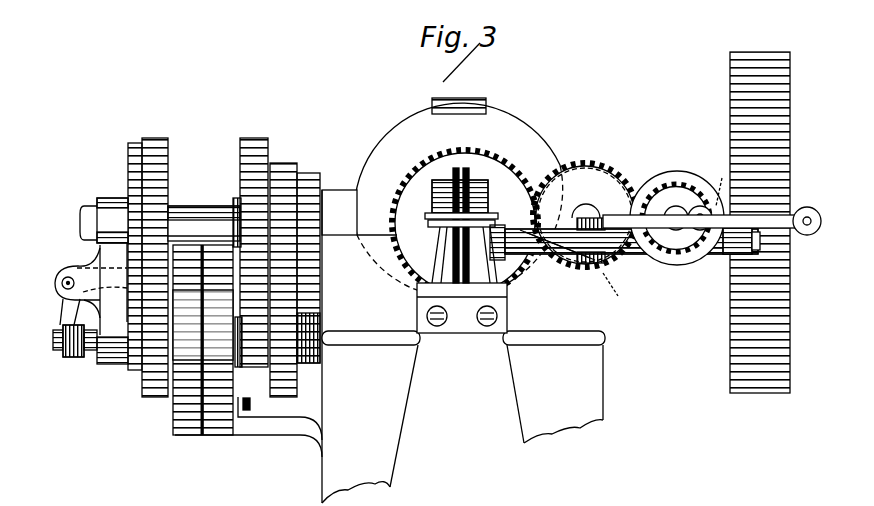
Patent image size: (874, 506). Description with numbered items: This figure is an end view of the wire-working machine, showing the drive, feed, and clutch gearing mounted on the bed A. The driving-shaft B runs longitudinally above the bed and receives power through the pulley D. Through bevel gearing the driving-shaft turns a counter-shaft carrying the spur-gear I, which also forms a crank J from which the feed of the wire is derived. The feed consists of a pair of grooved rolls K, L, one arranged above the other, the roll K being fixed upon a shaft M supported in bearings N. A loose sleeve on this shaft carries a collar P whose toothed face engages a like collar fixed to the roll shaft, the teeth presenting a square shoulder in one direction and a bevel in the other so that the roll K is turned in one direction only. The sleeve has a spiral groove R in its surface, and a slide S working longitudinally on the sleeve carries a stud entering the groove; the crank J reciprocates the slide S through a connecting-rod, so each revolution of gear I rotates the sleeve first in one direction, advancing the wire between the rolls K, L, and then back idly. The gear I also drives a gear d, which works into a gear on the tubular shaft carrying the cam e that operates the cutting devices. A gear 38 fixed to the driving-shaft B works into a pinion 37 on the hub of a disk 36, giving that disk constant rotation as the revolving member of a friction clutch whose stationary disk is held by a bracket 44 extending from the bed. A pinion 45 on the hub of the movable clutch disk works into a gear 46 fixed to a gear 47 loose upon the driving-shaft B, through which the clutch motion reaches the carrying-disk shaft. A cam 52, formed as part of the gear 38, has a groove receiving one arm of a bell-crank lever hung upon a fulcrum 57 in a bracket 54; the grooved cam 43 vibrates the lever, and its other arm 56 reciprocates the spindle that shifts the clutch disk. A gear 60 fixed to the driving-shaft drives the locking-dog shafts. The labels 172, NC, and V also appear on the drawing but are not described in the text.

The gear 38 is at (155, 258).
The cam 52 is at (125, 256).
The gear 46 is at (254, 243).
The gear 47 is at (283, 270).
The gear 60 is at (308, 257).
The bracket 54 is at (102, 289).
The fulcrum 57 is at (77, 274).
The arm of bell-crank lever 56 is at (76, 328).
The disk 36 is at (187, 340).
The gear wheel 172 is at (218, 340).
The pinion 37 is at (145, 398).
The pinion 45 is at (246, 349).
The cam 43 is at (298, 361).
The bracket 44 is at (248, 427).
The bed A is at (463, 346).
The driving-shaft B is at (160, 217).
The collar P is at (468, 308).
The cam e is at (458, 197).
The bearings N is at (460, 188).
The rods NC is at (473, 221).
The grooved roll L is at (445, 210).
The grooved roll K is at (452, 240).
The gear d is at (578, 215).
The spiral groove R is at (578, 236).
The slide S is at (613, 290).
The shaft M is at (677, 229).
The spur-gear I is at (677, 218).
The crank J is at (718, 184).
The pulley D is at (760, 222).
The connecting rod V is at (740, 215).